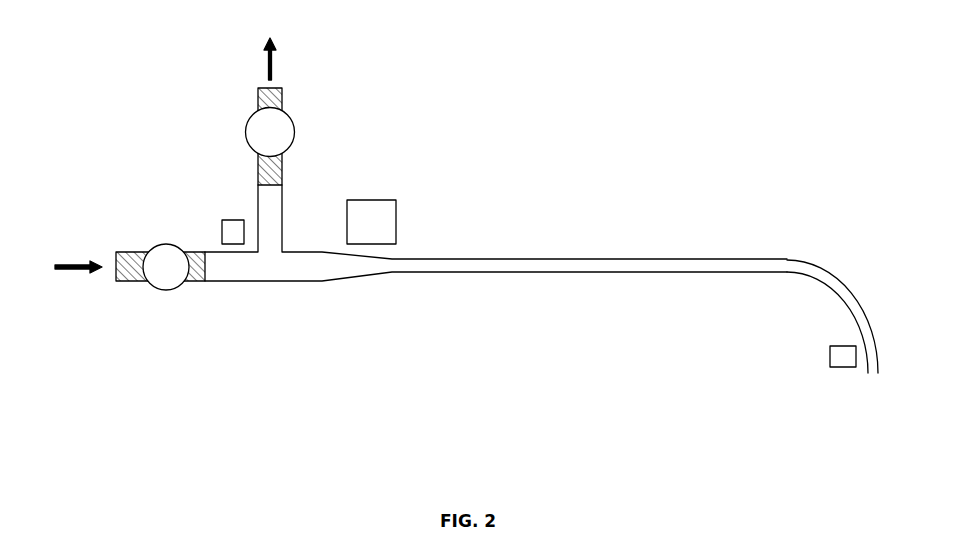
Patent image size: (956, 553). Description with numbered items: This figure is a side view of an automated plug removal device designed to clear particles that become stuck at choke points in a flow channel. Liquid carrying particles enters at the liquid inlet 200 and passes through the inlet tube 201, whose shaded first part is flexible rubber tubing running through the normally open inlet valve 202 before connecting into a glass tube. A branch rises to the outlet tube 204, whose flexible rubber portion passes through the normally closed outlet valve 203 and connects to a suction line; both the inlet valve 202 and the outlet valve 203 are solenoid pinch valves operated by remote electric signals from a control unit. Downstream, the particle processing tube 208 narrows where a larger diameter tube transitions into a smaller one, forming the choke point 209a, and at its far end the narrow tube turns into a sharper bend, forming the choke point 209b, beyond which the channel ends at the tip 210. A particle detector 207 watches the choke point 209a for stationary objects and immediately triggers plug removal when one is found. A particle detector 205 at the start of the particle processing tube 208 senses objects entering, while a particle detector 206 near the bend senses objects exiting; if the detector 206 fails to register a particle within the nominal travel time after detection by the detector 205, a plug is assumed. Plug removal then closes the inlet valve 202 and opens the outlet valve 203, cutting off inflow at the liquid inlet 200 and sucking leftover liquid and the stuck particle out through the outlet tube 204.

The liquid inlet 200 is at (68, 252).
The inlet tube 201 is at (127, 247).
The inlet valve 202 is at (170, 243).
The outlet valve 203 is at (247, 118).
The outlet tube 204 is at (260, 58).
The particle detector 205 is at (230, 218).
The particle detector 206 is at (828, 362).
The particle detector 207 is at (383, 198).
The particle processing tube 208 is at (477, 258).
The choke point at tube diameter transition 209a is at (378, 285).
The choke point at sharp bend 209b is at (822, 272).
The channel tip outlet 210 is at (873, 375).